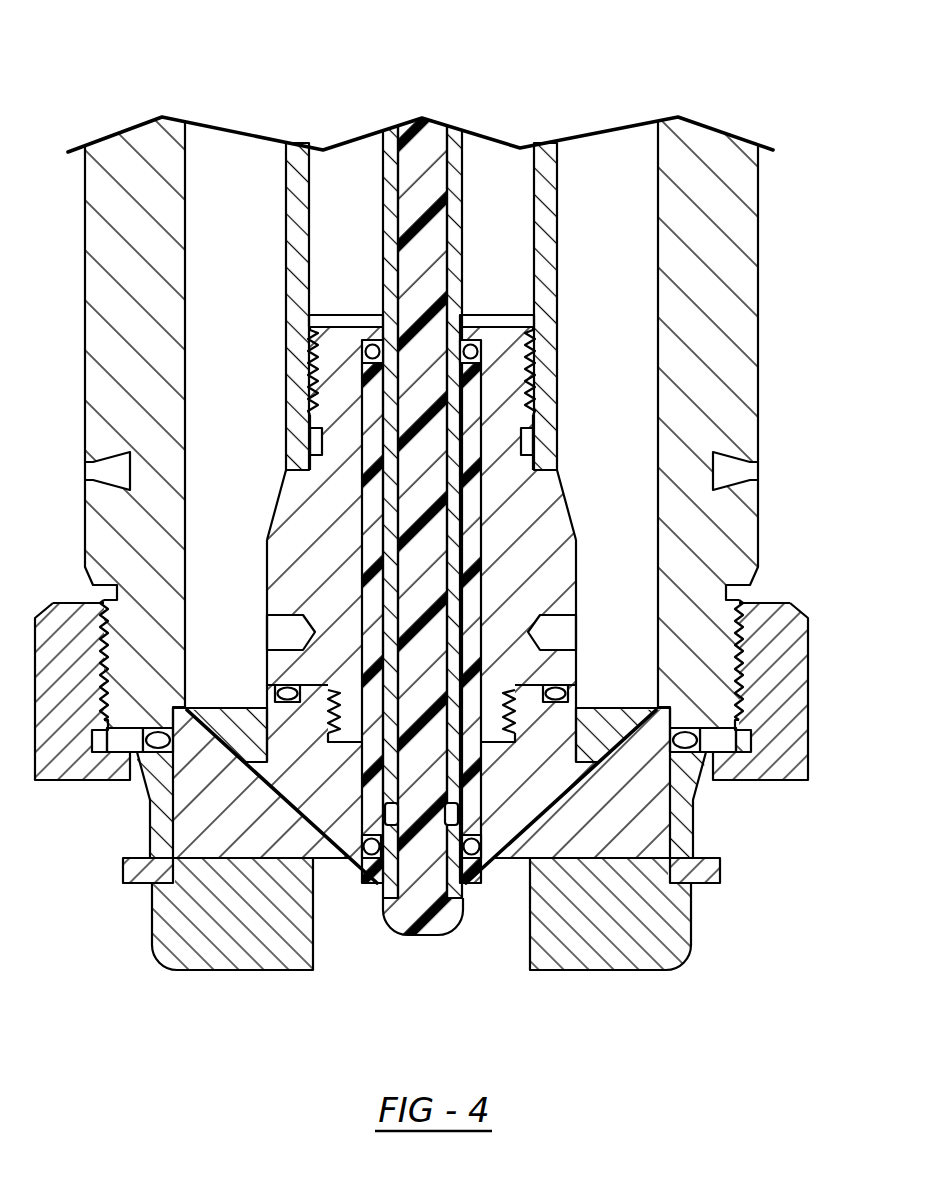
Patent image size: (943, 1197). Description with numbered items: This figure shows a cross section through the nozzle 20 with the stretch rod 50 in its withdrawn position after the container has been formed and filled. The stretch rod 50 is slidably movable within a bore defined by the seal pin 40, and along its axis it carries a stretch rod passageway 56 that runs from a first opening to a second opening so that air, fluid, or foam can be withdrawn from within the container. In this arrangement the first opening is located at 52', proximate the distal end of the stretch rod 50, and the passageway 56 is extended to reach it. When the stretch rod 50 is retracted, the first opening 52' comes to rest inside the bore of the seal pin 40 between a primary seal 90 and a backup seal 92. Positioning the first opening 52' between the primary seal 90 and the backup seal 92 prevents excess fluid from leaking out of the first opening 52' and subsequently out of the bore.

The nozzle 20 is at (305, 737).
The seal pin 40 is at (197, 822).
The stretch rod 50 is at (383, 163).
The first opening 52' is at (541, 922).
The stretch rod passageway 56 is at (447, 167).
The primary seal 90 is at (475, 852).
The backup seal 92 is at (478, 351).